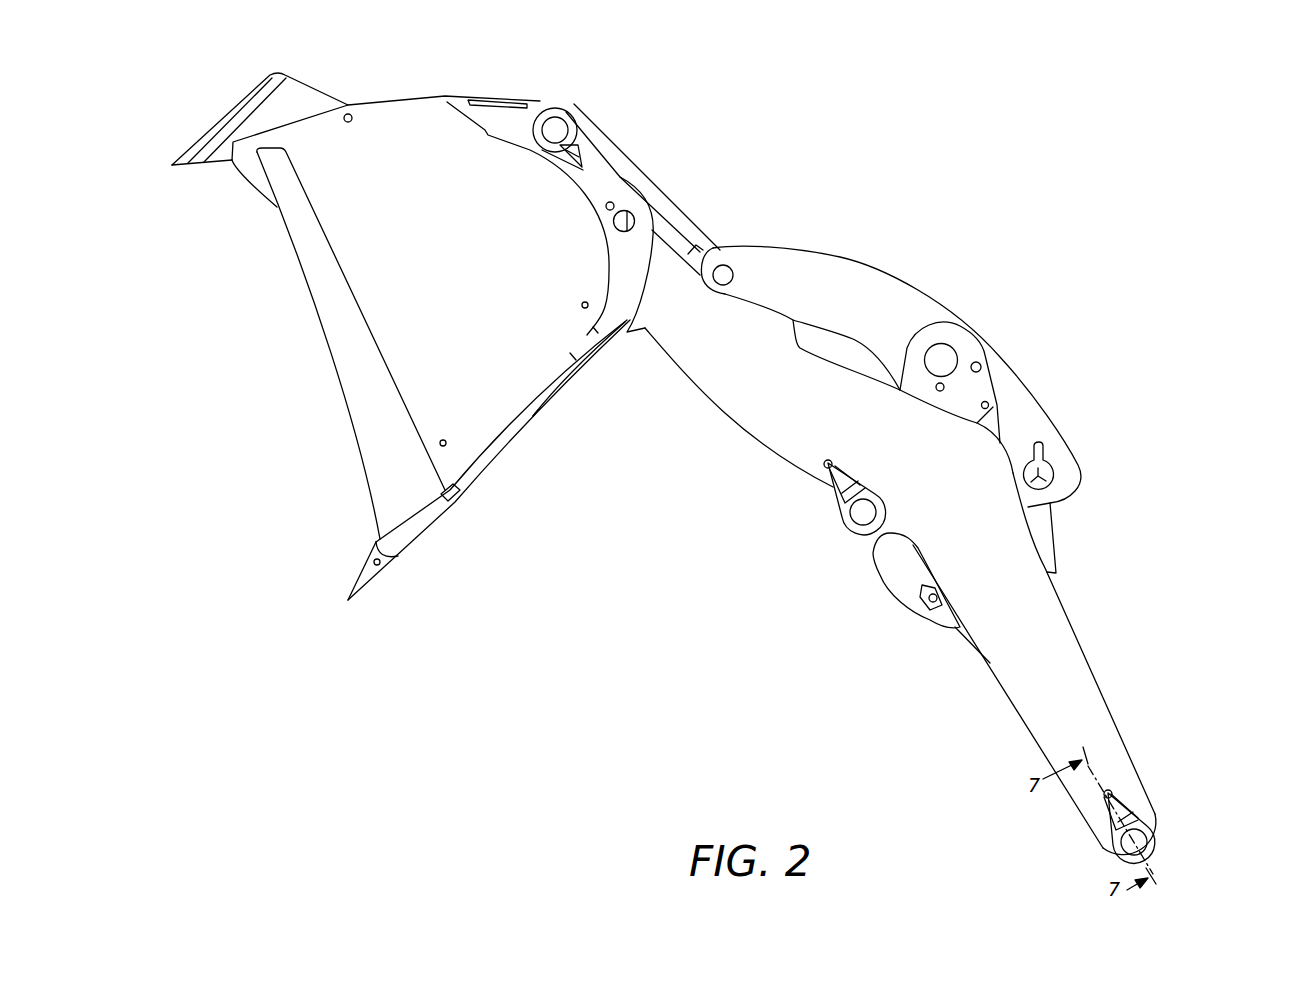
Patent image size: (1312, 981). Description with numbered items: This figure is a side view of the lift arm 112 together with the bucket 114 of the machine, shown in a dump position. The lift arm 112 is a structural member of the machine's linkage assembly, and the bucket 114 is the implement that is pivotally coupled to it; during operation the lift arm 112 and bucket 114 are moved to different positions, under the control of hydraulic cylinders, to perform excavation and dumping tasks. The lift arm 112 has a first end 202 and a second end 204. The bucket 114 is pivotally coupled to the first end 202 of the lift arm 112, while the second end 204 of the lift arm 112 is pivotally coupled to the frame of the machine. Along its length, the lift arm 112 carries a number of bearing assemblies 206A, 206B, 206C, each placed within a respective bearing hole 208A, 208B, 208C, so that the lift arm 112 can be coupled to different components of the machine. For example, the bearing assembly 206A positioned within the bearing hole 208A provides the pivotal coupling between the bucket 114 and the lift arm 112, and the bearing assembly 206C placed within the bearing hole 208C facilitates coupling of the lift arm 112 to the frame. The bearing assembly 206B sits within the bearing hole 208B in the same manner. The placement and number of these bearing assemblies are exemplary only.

The lift arm 112 is at (829, 417).
The bucket 114 is at (461, 278).
The first end 202 is at (649, 350).
The second end 204 is at (1146, 720).
The bearing assembly 206A is at (573, 140).
The bearing assembly 206B is at (845, 487).
The bearing assembly 206C is at (1147, 822).
The bearing hole 208A is at (556, 118).
The bearing hole 208B is at (845, 522).
The bearing hole 208C is at (1148, 848).